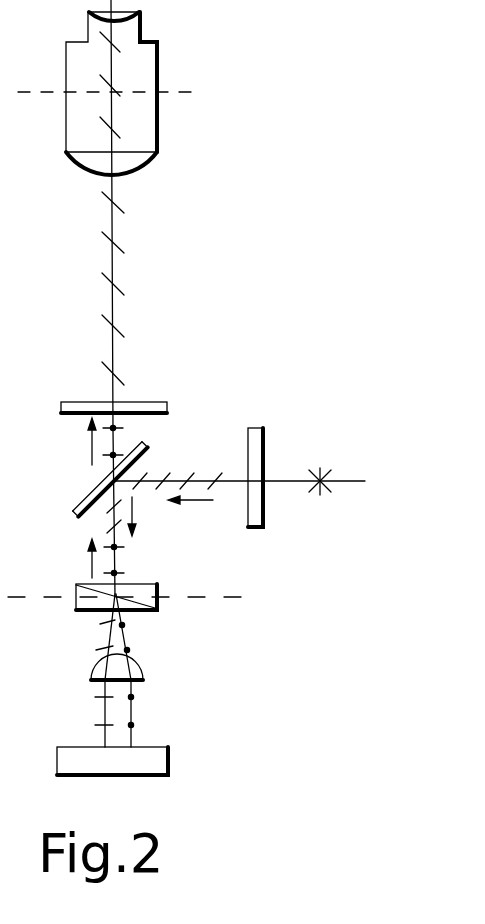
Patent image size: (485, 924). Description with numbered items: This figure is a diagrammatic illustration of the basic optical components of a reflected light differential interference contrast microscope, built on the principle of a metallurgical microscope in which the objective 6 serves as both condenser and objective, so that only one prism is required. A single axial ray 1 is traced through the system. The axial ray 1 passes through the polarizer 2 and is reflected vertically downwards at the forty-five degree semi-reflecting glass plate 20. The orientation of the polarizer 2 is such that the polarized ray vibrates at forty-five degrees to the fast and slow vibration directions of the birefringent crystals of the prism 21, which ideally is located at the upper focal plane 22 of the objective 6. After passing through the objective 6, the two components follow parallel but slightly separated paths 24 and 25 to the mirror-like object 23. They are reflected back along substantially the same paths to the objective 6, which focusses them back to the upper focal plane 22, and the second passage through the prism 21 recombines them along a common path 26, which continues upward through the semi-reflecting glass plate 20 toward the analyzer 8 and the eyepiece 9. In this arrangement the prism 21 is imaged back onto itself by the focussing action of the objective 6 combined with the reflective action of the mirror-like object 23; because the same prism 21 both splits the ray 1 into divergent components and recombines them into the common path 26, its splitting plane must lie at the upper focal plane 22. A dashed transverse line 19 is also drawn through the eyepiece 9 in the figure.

The axial ray 1 is at (251, 481).
The polarizer 2 is at (255, 492).
The objective 6 is at (128, 667).
The analyzer 8 is at (125, 407).
The eyepiece 9 is at (158, 50).
The transverse axis 19 is at (126, 92).
The semi-reflecting glass plate 20 is at (108, 482).
The prism 21 is at (147, 608).
The upper focal plane 22 is at (146, 597).
The mirror-like object 23 is at (129, 761).
The path 24 is at (102, 708).
The path 25 is at (133, 708).
The common path 26 is at (117, 553).